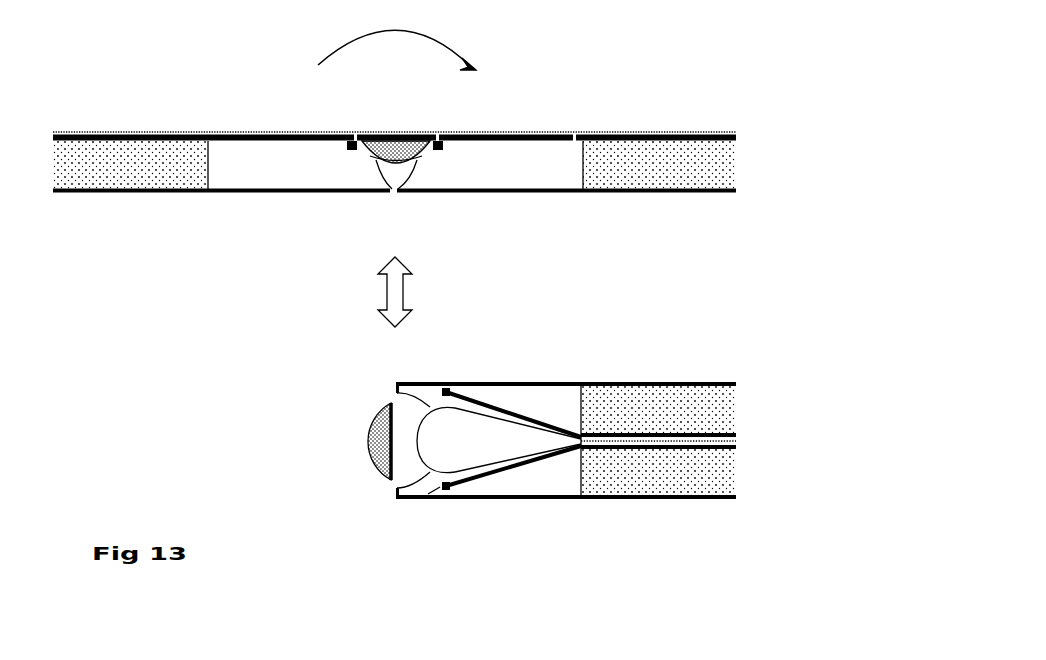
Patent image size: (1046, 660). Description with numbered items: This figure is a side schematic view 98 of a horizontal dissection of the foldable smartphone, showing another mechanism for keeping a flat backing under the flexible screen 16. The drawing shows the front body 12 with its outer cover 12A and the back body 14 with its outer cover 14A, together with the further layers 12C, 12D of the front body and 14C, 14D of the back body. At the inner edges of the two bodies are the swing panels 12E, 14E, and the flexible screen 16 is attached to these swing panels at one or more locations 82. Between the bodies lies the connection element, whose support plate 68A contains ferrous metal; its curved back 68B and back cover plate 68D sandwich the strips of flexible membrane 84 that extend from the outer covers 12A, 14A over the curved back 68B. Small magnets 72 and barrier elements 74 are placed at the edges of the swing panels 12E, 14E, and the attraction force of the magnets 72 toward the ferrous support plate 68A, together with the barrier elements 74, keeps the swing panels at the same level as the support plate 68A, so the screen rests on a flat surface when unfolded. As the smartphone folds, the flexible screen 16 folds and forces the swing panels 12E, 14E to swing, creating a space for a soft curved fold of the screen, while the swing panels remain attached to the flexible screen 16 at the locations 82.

The front body 12 is at (73, 190).
The outer cover 12A is at (97, 192).
The core layer of first sheet 12C is at (158, 141).
The inner edge of first sheet 12D is at (217, 141).
The swing panel 12E is at (251, 141).
The back body 14 is at (722, 190).
The outer cover 14A is at (685, 192).
The core layer of second sheet 14C is at (622, 141).
The inner edge of second sheet 14D is at (573, 141).
The swing panel 14E is at (483, 142).
The flexible screen 16 is at (638, 133).
The support plate 68A is at (398, 472).
The curved back 68B is at (372, 410).
The back cover plate 68D is at (368, 441).
The magnet 72 is at (440, 146).
The barrier element 74 is at (437, 392).
The location 82 is at (522, 133).
The flexible membrane 84 is at (382, 486).
The side schematic view 98 is at (295, 92).